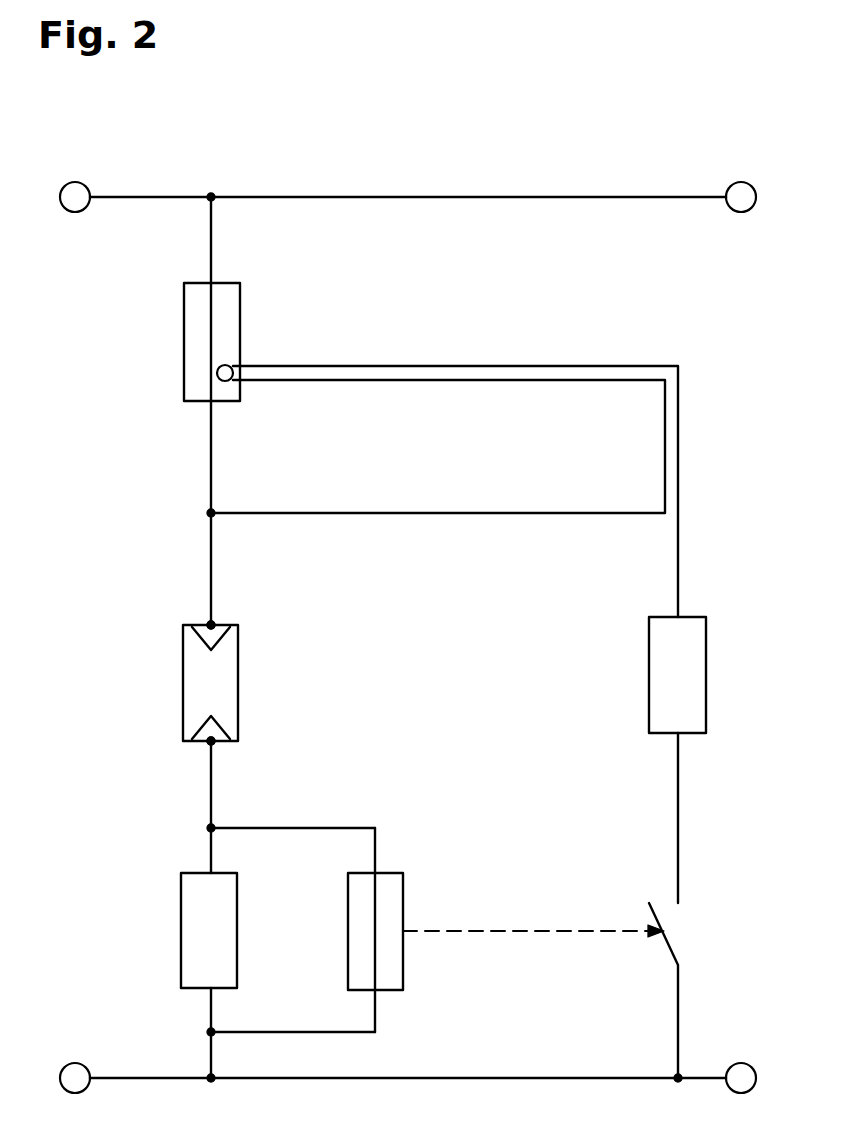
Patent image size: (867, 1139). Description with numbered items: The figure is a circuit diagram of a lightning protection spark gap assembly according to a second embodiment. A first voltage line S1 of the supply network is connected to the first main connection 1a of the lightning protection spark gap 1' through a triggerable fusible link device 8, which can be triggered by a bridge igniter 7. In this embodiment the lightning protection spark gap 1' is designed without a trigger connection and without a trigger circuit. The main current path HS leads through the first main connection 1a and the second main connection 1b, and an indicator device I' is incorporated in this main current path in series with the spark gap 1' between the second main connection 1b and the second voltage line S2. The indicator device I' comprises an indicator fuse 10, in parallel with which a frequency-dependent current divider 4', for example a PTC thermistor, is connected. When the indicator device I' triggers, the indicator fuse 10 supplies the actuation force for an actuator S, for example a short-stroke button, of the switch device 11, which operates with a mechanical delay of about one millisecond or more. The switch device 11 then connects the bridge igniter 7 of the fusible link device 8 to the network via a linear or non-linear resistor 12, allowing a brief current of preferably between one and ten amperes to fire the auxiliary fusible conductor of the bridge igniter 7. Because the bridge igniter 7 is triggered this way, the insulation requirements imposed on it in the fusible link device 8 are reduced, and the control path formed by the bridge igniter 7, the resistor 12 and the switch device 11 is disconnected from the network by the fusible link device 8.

The first voltage line S1 is at (302, 196).
The second voltage line S2 is at (487, 1076).
The fusible link device 8 is at (240, 312).
The bridge igniter 7 is at (226, 365).
The lightning protection spark gap 1' is at (250, 683).
The first main connection 1a is at (212, 623).
The second main connection 1b is at (212, 742).
The main current path HS is at (209, 812).
The frequency-dependent current divider 4' is at (253, 930).
The indicator device I' is at (117, 998).
The indicator fuse 10 is at (403, 907).
The actuator S is at (628, 930).
The resistor 12 is at (706, 676).
The switch device 11 is at (660, 922).